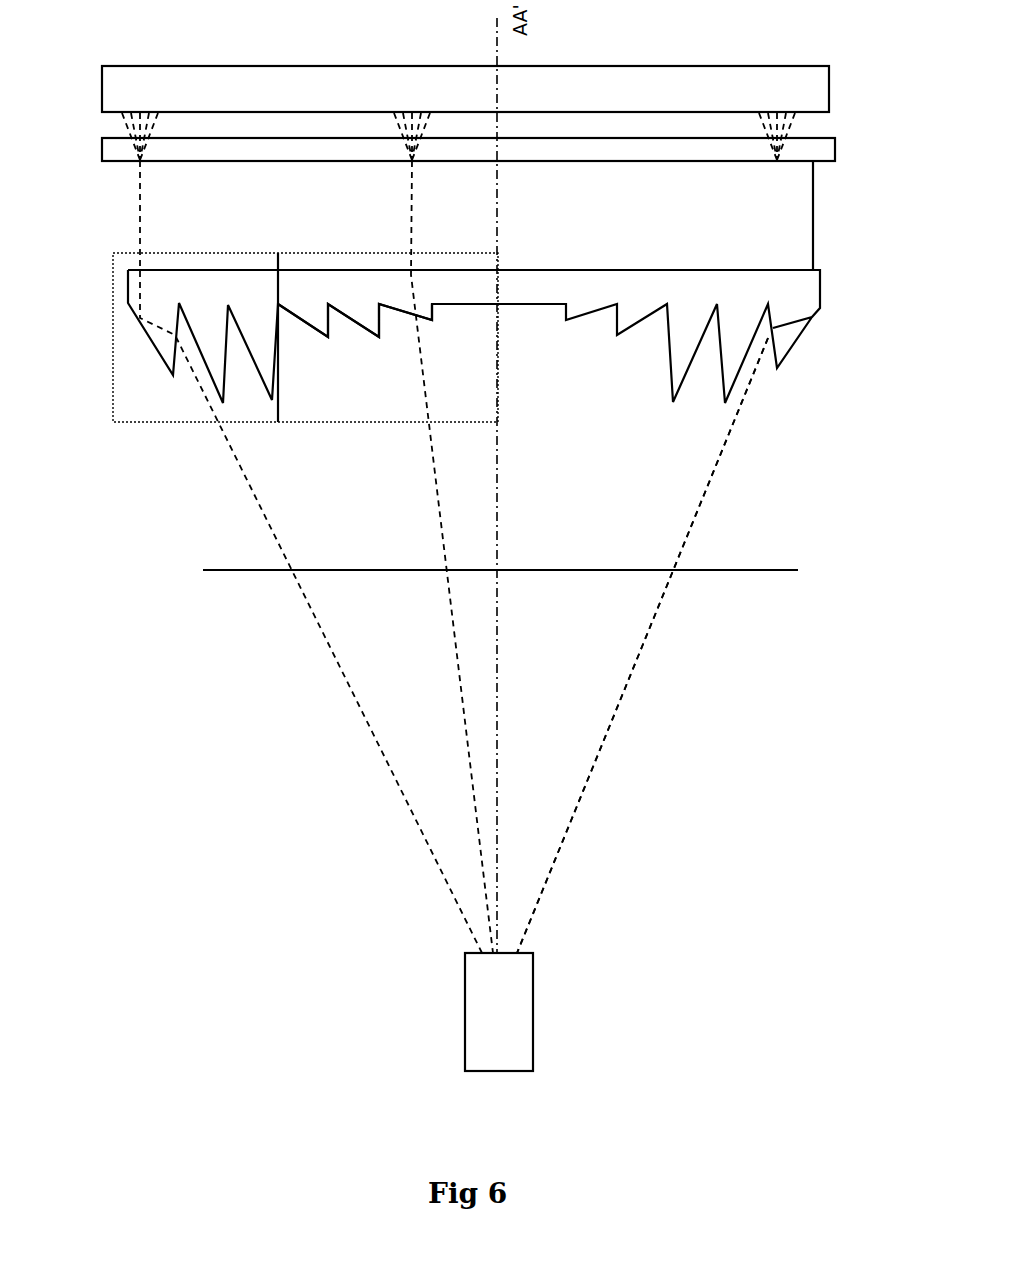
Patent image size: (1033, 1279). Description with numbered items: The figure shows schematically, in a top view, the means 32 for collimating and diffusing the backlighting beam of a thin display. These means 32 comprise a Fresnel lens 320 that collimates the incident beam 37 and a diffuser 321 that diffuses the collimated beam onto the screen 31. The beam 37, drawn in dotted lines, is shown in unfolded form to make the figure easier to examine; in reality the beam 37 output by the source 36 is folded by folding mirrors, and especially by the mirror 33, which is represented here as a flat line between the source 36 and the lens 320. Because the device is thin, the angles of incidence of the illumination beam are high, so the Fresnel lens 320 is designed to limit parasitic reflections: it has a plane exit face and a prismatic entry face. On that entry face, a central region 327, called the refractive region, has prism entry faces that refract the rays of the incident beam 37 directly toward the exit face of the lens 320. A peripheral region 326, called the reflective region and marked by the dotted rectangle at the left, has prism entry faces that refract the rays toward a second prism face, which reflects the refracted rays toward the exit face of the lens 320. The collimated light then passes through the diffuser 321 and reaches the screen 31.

The screen 31 is at (795, 79).
The means for collimating and diffusing the backlighting beam 32 is at (110, 340).
The diffuser 321 is at (775, 163).
The Fresnel lens 320 is at (532, 287).
The peripheral region 326 is at (162, 347).
The central region 327 is at (369, 323).
The mirror 33 is at (228, 570).
The source 36 is at (465, 998).
The incident beam 37 is at (688, 472).